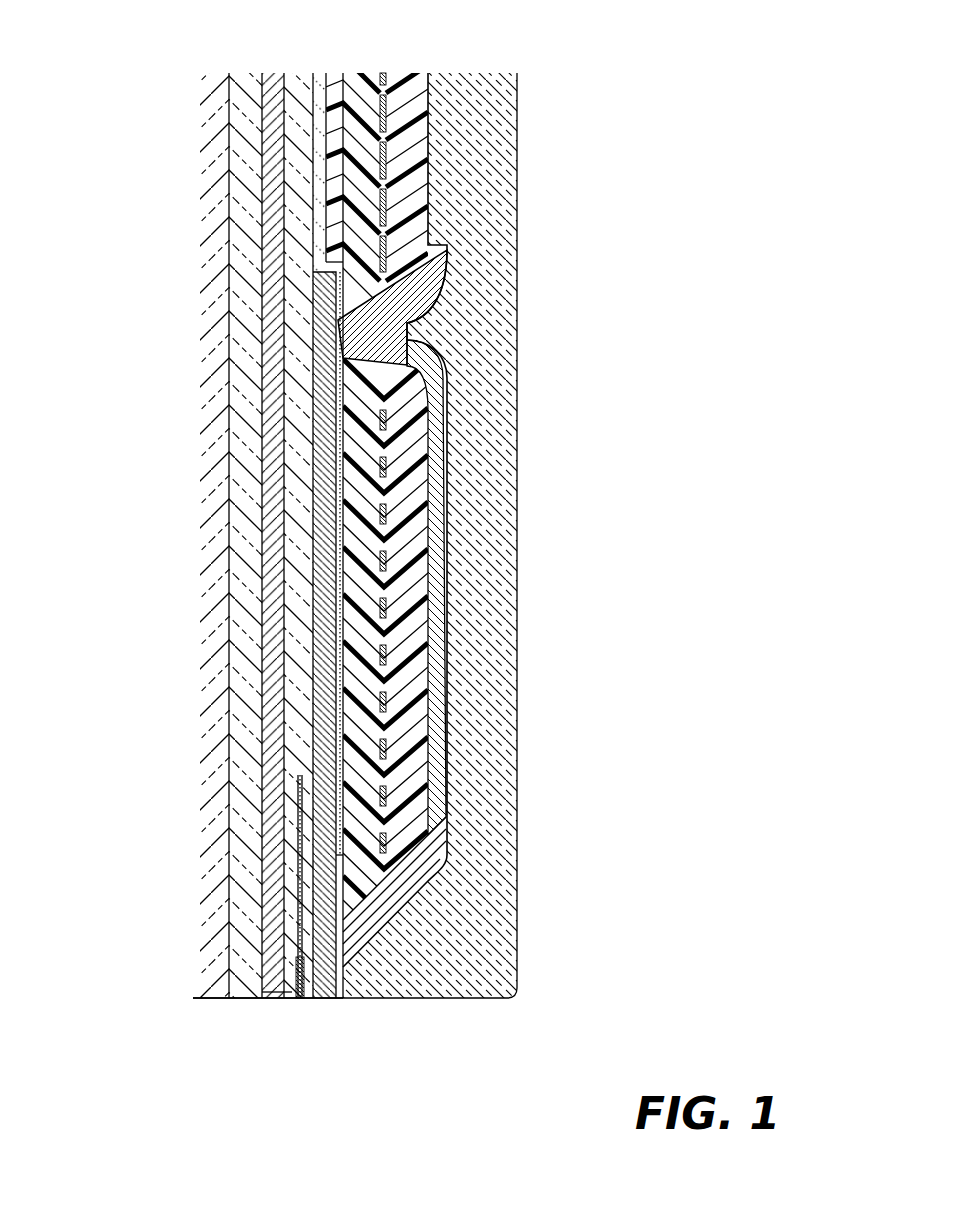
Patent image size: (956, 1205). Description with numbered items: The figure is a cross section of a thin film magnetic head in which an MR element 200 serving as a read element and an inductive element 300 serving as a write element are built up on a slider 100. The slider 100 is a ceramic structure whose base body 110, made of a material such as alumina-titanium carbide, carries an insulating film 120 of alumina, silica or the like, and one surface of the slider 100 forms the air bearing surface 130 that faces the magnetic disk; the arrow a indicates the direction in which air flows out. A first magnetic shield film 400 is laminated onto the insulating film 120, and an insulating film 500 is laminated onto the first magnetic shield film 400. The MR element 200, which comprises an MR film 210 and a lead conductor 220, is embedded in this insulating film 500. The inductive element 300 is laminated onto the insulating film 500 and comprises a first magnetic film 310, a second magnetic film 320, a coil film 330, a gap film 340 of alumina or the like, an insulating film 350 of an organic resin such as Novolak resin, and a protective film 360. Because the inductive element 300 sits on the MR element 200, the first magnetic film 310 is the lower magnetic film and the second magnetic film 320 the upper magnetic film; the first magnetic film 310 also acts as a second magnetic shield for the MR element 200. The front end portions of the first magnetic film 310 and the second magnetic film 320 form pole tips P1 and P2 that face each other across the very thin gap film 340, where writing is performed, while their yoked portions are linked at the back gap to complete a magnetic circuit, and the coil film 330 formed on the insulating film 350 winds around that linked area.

The slider 100 is at (181, 166).
The base body 110 is at (215, 92).
The insulating film 120 is at (244, 92).
The air bearing surface 130 is at (248, 1012).
The MR element 200 is at (284, 940).
The MR film 210 is at (262, 992).
The lead conductor 220 is at (298, 796).
The inductive element 300 is at (438, 908).
The first magnetic film 310 is at (313, 443).
The second magnetic film 320 is at (458, 519).
The coil film 330 is at (390, 752).
The gap film 340 is at (340, 365).
The insulating film 350 is at (405, 678).
The protective film 360 is at (470, 357).
The first magnetic shield film 400 is at (276, 641).
The insulating film 500 is at (297, 96).
The pole tip P1 is at (326, 974).
The pole tip P2 is at (346, 984).
The arrow a is at (524, 1033).